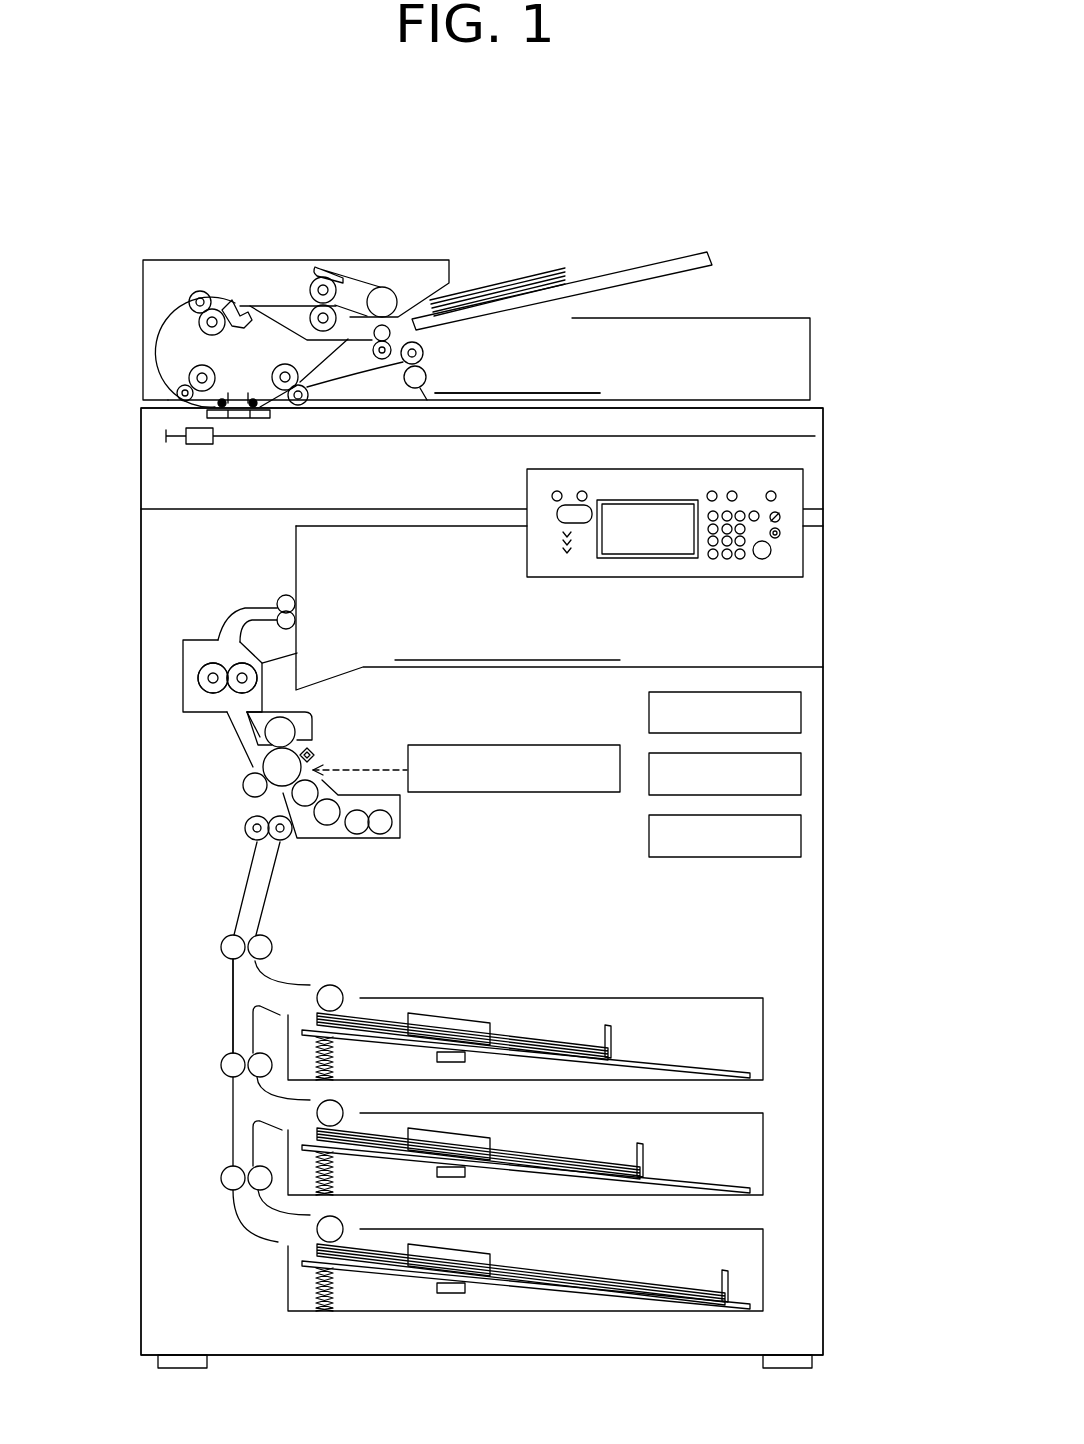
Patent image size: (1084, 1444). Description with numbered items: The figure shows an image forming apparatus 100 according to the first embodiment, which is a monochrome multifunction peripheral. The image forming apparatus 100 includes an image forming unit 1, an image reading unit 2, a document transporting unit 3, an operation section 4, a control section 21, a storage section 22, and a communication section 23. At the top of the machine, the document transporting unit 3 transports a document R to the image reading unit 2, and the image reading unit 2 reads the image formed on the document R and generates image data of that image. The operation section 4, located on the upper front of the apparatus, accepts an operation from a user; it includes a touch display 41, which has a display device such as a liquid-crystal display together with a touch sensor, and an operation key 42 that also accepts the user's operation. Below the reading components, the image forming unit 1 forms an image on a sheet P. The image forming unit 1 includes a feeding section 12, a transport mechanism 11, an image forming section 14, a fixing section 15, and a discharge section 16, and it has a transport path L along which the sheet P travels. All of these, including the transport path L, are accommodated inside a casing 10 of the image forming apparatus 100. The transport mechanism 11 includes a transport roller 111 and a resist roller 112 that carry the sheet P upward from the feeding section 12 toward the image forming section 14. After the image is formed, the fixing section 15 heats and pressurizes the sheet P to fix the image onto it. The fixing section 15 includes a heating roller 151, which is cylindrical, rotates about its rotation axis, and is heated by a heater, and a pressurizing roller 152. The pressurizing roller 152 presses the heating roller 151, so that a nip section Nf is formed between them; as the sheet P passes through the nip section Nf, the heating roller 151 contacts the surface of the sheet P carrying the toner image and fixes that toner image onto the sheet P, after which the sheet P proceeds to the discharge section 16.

The image forming apparatus 100 is at (431, 228).
The image forming unit 1 is at (140, 557).
The image reading unit 2 is at (140, 452).
The document transporting unit 3 is at (730, 301).
The operation section 4 is at (806, 486).
The touch display 41 is at (662, 522).
The operation key 42 is at (772, 552).
The casing 10 is at (823, 918).
The transport mechanism 11 is at (205, 1023).
The transport roller 111 is at (226, 937).
The resist roller 112 is at (244, 828).
The feeding section 12 is at (343, 976).
The image forming section 14 is at (333, 759).
The fixing section 15 is at (181, 640).
The heating roller 151 is at (198, 678).
The pressurizing roller 152 is at (298, 651).
The discharge section 16 is at (303, 601).
The control section 21 is at (802, 713).
The storage section 22 is at (802, 774).
The communication section 23 is at (802, 836).
The document R is at (546, 268).
The sheet P is at (522, 657).
The transport path L is at (211, 1009).
The nip section Nf is at (226, 662).